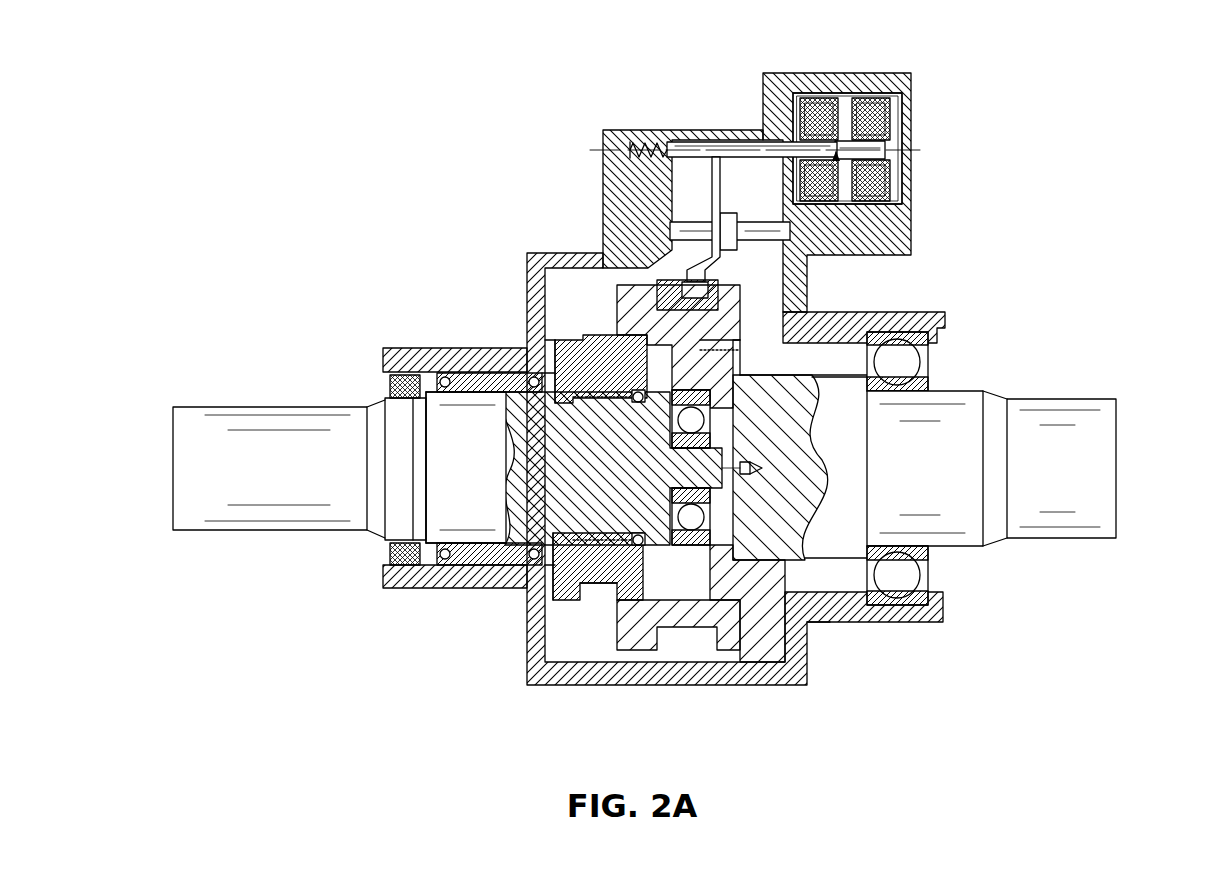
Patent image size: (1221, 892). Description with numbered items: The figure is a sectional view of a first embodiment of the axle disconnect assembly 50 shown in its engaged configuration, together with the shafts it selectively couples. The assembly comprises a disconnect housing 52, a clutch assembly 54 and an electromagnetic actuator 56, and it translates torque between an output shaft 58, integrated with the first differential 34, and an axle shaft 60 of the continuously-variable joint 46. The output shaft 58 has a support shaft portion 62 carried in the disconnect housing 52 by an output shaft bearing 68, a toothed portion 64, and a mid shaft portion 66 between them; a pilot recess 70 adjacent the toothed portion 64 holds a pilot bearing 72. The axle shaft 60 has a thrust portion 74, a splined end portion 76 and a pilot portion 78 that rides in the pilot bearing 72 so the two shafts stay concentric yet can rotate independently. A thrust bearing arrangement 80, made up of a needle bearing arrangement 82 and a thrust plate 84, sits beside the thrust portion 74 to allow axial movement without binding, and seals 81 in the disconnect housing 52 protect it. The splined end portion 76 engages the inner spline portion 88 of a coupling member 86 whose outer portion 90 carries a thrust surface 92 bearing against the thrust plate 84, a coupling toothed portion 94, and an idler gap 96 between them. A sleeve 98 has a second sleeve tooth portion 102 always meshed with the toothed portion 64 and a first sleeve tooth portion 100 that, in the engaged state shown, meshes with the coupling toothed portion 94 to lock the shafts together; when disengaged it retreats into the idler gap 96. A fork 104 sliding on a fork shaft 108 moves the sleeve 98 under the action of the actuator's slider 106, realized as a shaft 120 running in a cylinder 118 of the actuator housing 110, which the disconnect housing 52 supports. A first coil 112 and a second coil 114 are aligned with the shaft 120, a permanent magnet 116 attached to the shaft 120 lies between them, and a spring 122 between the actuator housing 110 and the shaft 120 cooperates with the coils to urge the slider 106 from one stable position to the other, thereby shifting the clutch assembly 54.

The first differential 34 is at (1120, 456).
The continuously-variable joint 46 is at (173, 471).
The axle disconnect assembly 50 is at (444, 166).
The disconnect housing 52 is at (622, 193).
The clutch assembly 54 is at (658, 282).
The electromagnetic actuator 56 is at (868, 169).
The output shaft 58 is at (1053, 442).
The axle shaft 60 is at (231, 433).
The support shaft portion 62 is at (920, 412).
The toothed portion 64 is at (670, 350).
The mid shaft portion 66 is at (842, 462).
The output shaft bearing 68 is at (897, 574).
The pilot recess 70 is at (807, 624).
The pilot bearing 72 is at (690, 518).
The thrust portion 74 is at (460, 437).
The splined end portion 76 is at (566, 459).
The pilot portion 78 is at (678, 470).
The thrust bearing arrangement 80 is at (545, 373).
The seal 81 is at (380, 380).
The needle bearing arrangement 82 is at (455, 376).
The thrust plate 84 is at (552, 342).
The coupling member 86 is at (586, 350).
The inner spline portion 88 is at (562, 606).
The outer portion 90 is at (548, 606).
The thrust surface 92 is at (550, 574).
The coupling toothed portion 94 is at (630, 598).
The idler gap 96 is at (597, 590).
The sleeve 98 is at (722, 322).
The first sleeve tooth portion 100 is at (616, 350).
The second sleeve tooth portion 102 is at (736, 344).
The fork 104 is at (712, 278).
The slider 106 is at (826, 148).
The fork shaft 108 is at (760, 236).
The actuator housing 110 is at (912, 106).
The first coil 112 is at (822, 187).
The second coil 114 is at (871, 100).
The permanent magnet 116 is at (888, 155).
The cylinder 118 is at (870, 175).
The shaft 120 is at (680, 148).
The spring 122 is at (640, 150).